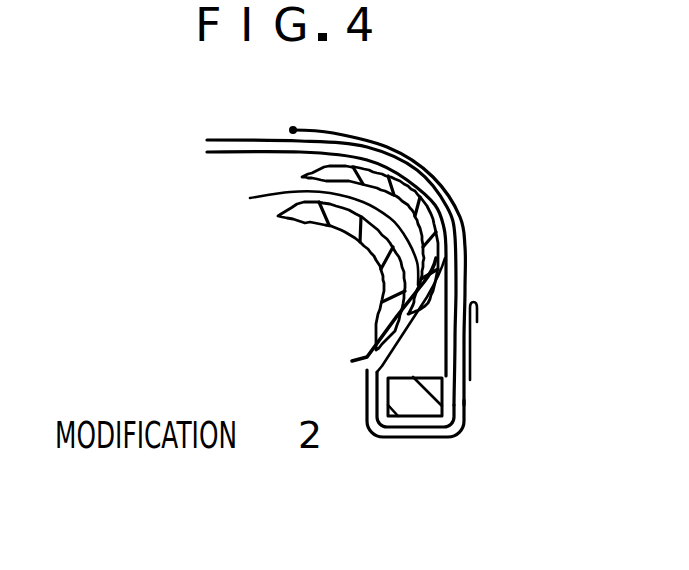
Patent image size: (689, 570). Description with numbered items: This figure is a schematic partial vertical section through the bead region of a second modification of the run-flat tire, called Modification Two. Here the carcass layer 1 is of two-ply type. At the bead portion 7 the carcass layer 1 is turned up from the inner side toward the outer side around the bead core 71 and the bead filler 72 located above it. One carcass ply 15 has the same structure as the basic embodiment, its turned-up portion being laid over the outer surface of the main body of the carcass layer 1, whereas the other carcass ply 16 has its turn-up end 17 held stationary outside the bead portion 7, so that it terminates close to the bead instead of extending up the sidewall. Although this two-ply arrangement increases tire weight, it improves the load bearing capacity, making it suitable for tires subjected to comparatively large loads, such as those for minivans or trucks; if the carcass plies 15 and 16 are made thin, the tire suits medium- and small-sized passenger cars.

The carcass layer 1 is at (450, 265).
The carcass ply 15 is at (470, 248).
The carcass ply 16 is at (477, 322).
The turn-up end 17 is at (462, 338).
The bead portion 7 is at (465, 375).
The bead core 71 is at (392, 379).
The bead filler 72 is at (430, 356).